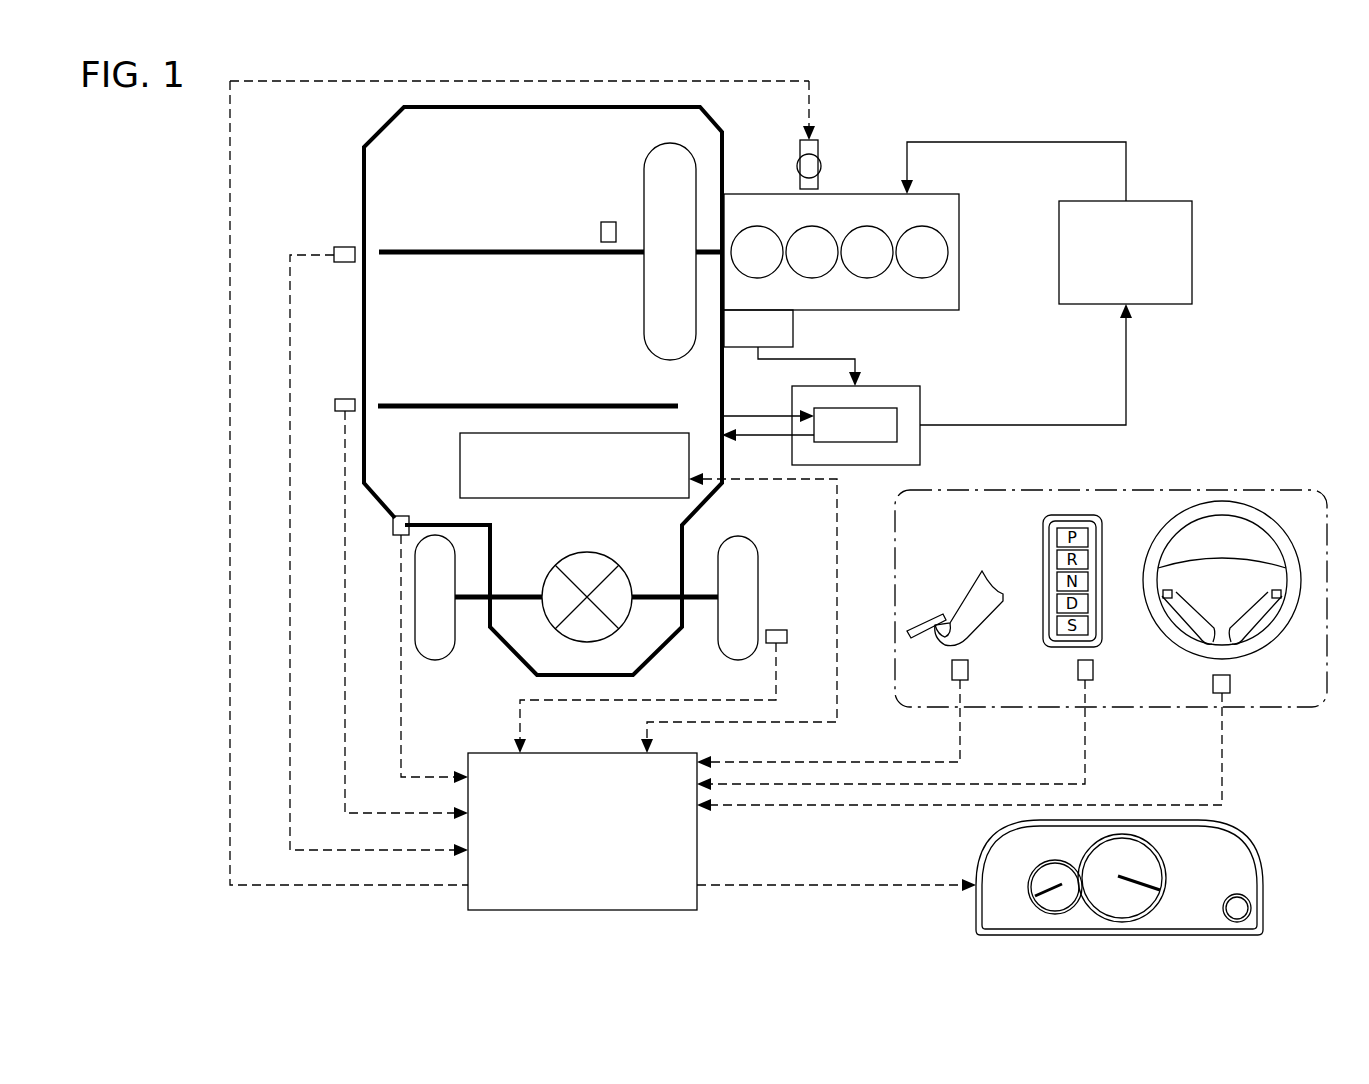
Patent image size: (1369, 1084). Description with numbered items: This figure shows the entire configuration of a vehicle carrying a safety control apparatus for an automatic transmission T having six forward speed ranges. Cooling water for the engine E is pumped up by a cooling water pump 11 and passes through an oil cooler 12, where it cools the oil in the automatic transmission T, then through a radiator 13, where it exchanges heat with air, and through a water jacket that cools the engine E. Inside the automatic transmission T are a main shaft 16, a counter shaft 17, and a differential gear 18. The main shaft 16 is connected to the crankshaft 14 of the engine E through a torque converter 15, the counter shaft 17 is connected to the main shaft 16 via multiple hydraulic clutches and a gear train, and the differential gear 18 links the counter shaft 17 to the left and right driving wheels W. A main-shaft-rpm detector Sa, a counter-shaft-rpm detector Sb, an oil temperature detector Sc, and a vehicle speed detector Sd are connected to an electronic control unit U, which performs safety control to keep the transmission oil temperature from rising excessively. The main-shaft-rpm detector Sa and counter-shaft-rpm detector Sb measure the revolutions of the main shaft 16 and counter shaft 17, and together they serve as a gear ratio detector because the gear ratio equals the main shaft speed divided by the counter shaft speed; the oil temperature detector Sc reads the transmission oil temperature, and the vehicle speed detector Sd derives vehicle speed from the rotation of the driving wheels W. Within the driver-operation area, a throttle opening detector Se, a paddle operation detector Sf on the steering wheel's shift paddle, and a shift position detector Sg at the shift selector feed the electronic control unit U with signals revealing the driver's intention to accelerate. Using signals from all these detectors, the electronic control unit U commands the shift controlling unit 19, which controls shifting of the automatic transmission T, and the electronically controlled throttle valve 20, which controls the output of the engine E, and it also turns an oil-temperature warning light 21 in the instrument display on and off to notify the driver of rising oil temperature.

The automatic transmission T is at (358, 166).
The engine E is at (959, 270).
The cooling water pump 11 is at (790, 328).
The oil cooler 12 is at (890, 386).
The radiator 13 is at (1192, 223).
The crankshaft 14 is at (712, 250).
The torque converter 15 is at (650, 185).
The main shaft 16 is at (485, 252).
The counter shaft 17 is at (485, 406).
The differential gear 18 is at (600, 550).
The shift controlling unit 19 is at (460, 455).
The electronically controlled throttle valve 20 is at (821, 166).
The oil-temperature warning light 21 is at (1250, 905).
The driving wheels W is at (438, 662).
The electronic control unit U is at (643, 910).
The main-shaft-rpm detector Sa is at (344, 247).
The counter-shaft-rpm detector Sb is at (345, 399).
The oil temperature detector Sc is at (401, 516).
The vehicle speed detector Sd is at (777, 630).
The throttle opening detector Se is at (968, 670).
The paddle operation detector Sf is at (1230, 684).
The shift position detector Sg is at (1093, 670).